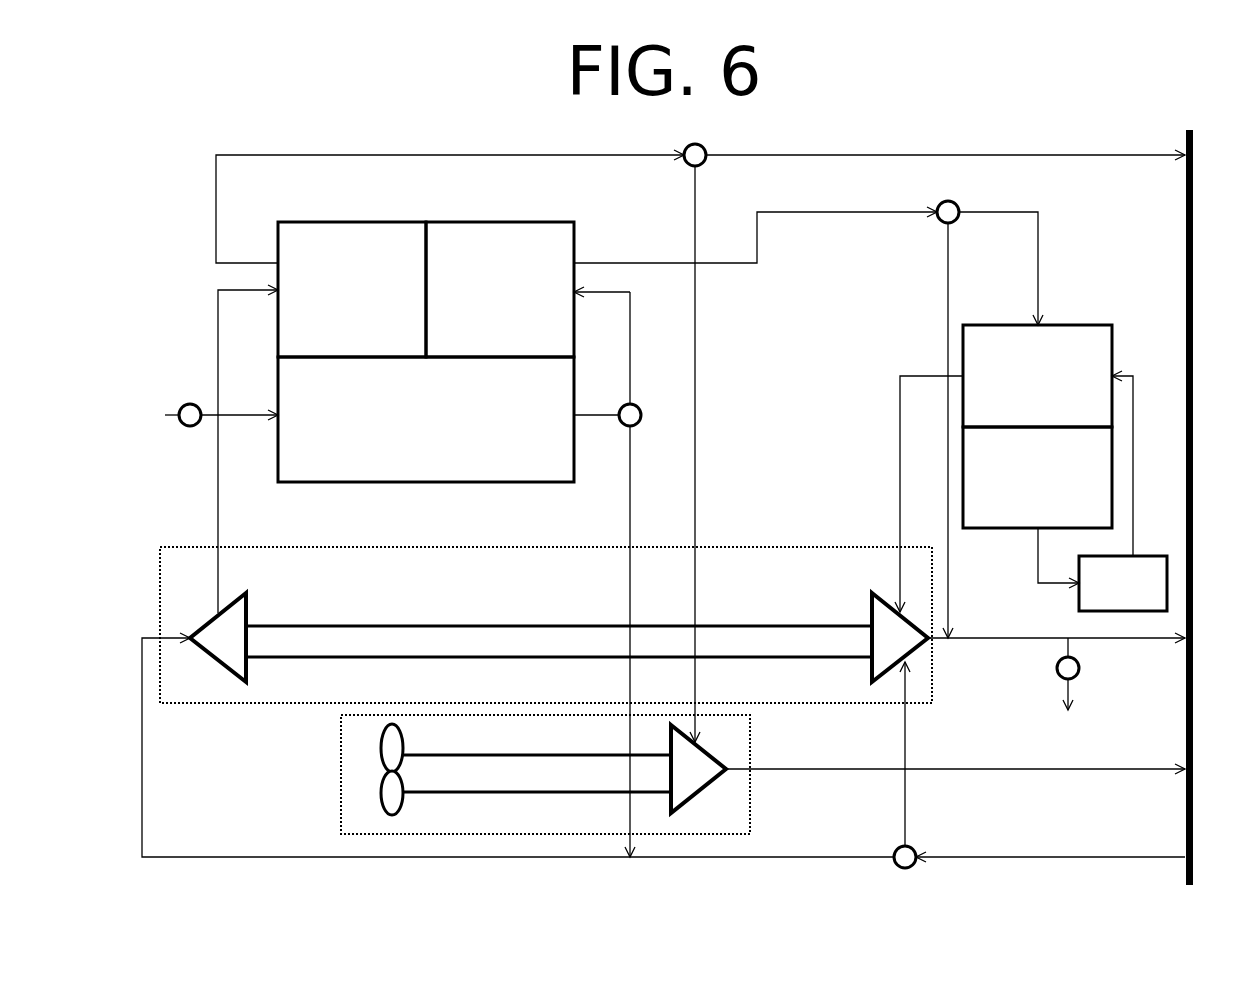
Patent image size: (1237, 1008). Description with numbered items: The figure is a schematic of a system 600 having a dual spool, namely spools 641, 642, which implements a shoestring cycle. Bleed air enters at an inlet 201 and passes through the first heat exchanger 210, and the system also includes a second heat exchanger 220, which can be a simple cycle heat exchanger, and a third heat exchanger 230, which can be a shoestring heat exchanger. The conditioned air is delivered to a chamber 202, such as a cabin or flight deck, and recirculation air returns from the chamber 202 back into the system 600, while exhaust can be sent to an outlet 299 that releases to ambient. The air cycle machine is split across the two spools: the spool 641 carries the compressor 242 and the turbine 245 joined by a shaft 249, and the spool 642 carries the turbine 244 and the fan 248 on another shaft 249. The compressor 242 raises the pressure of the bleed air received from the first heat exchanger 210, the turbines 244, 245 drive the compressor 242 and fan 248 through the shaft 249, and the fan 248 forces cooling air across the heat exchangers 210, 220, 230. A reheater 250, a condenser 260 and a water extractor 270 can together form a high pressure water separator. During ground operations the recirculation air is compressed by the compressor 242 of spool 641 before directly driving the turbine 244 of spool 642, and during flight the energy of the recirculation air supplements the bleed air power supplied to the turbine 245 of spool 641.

The system 600 is at (138, 174).
The chamber 202 is at (1188, 473).
The inlet 201 is at (202, 418).
The third heat exchanger 230 is at (333, 329).
The second heat exchanger 220 is at (481, 341).
The first heat exchanger 210 is at (407, 440).
The reheater 250 is at (1019, 388).
The condenser 260 is at (1019, 490).
The water extractor 270 is at (1104, 593).
The spool 641 is at (160, 592).
The spool 642 is at (341, 822).
The compressor 242 is at (218, 637).
The turbine 245 is at (900, 637).
The turbine 244 is at (698, 769).
The fan 248 is at (403, 732).
The shaft 249 is at (559, 710).
The outlet 299 is at (1058, 697).